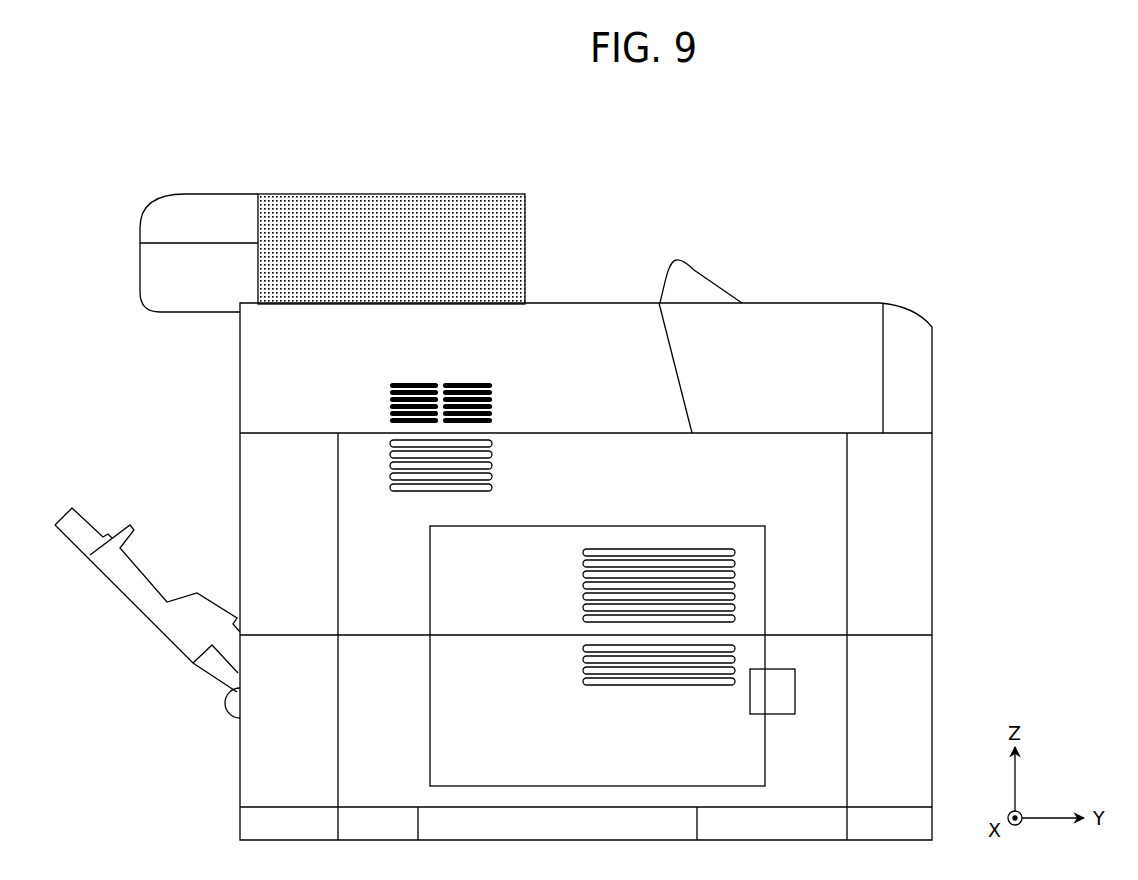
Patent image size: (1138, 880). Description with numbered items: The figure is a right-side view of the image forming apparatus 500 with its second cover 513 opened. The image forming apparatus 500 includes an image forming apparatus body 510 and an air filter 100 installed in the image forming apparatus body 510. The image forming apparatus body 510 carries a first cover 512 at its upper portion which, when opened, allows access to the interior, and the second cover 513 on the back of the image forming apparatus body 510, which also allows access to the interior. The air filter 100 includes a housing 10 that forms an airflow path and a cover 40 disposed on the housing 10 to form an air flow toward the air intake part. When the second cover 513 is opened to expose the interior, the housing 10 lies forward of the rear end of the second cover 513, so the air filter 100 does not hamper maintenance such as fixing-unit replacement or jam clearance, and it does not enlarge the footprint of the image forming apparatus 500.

The image forming apparatus 500 is at (975, 116).
The air filter 100 is at (108, 166).
The housing 10 is at (148, 272).
The cover 40 is at (502, 243).
The image forming apparatus body 510 is at (924, 267).
The first cover 512 is at (922, 372).
The second cover 513 is at (142, 599).